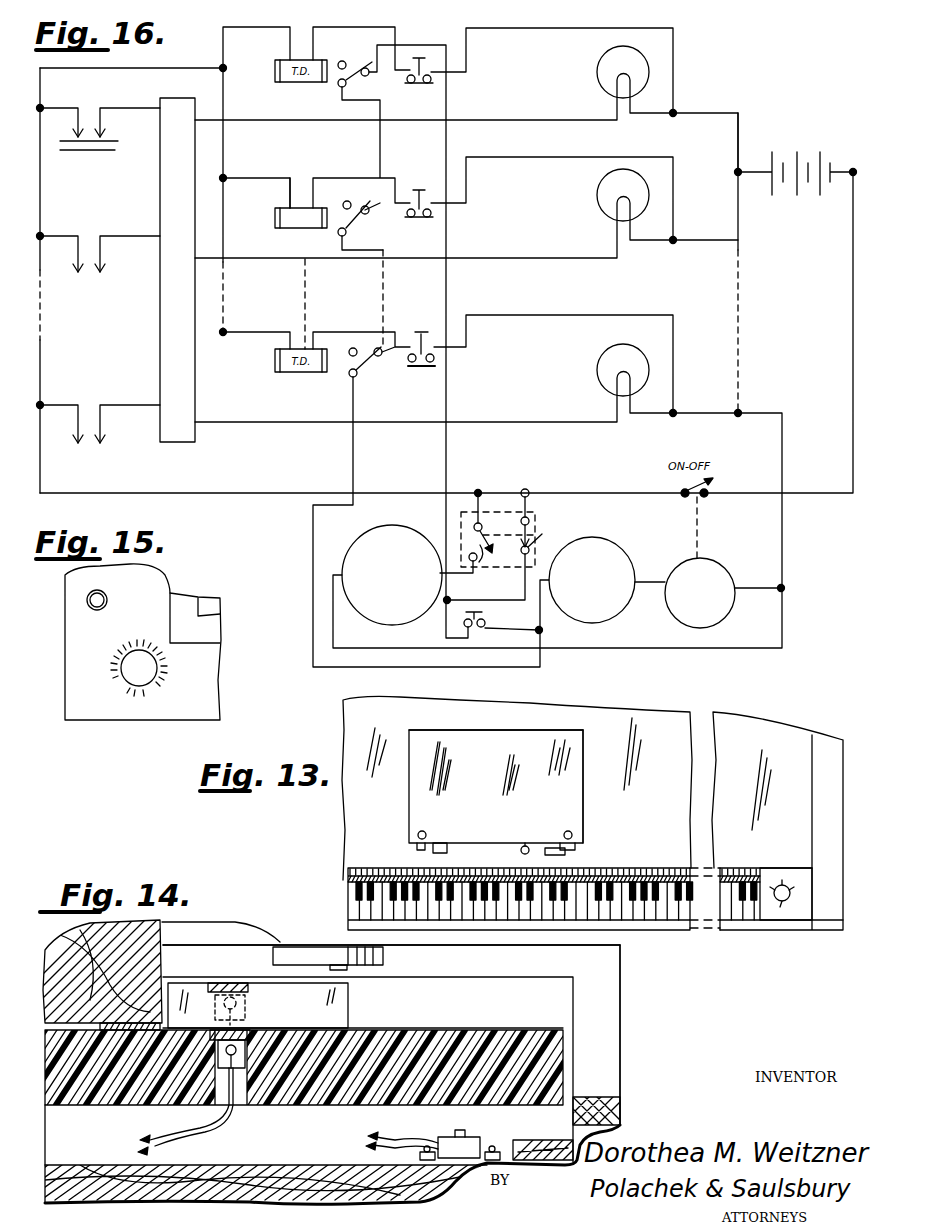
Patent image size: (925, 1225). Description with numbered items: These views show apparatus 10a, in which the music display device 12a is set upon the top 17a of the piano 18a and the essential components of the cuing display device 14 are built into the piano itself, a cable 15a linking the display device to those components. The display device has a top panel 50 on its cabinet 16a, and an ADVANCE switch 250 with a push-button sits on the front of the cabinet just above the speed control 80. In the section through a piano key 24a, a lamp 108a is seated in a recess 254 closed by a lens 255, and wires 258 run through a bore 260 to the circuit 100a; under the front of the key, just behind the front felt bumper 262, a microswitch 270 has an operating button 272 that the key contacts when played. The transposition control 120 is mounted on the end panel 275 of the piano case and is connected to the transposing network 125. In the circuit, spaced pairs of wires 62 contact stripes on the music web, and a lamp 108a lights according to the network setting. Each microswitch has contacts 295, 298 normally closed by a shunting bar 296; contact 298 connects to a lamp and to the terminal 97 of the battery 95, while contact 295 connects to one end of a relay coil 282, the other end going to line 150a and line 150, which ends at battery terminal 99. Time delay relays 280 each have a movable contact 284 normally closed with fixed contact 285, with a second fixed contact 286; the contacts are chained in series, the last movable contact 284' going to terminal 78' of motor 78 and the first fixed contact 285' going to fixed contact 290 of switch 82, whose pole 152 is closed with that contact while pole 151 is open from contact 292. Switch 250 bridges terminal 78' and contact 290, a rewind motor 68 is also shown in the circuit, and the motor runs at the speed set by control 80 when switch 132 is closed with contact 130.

In FIG. 16, the spaced pairs of wires 62 is at (92, 114).
In FIG. 16, the transposing network 125 is at (162, 98).
In FIG. 16, the line 150 is at (42, 207).
In FIG. 16, the line 150a is at (238, 114).
In FIG. 16, the time delay relays 280 is at (301, 192).
In FIG. 16, the coil 282 is at (285, 232).
In FIG. 16, the movable contact 284 is at (362, 223).
In FIG. 16, the last movable relay contact 284' is at (370, 376).
In FIG. 16, the fixed contact 285 is at (396, 227).
In FIG. 16, the fixed contact of the first relay 285' is at (390, 86).
In FIG. 16, the fixed contact 286 is at (349, 201).
In FIG. 16, the microswitch 270 is at (412, 350).
In FIG. 14, the microswitch 270 is at (466, 1148).
In FIG. 16, the operating button 272 is at (429, 331).
In FIG. 14, the operating button 272 is at (443, 1138).
In FIG. 16, the contact 295 is at (410, 362).
In FIG. 16, the shunting bar 296 is at (432, 368).
In FIG. 16, the contact 298 is at (437, 357).
In FIG. 16, the lamp 108a is at (600, 88).
In FIG. 14, the lamp 108a is at (215, 1050).
In FIG. 16, the circuit 100a is at (706, 100).
In FIG. 16, the battery terminal 97 is at (756, 171).
In FIG. 16, the battery 95 is at (819, 160).
In FIG. 16, the battery terminal 99 is at (840, 171).
In FIG. 16, the rewind motor 68 is at (357, 531).
In FIG. 16, the switch 82 is at (461, 518).
In FIG. 13, the switch 82 is at (582, 852).
In FIG. 16, the switch contact 292 is at (469, 555).
In FIG. 16, the switch pole 151 is at (503, 565).
In FIG. 16, the switch pole 152 is at (530, 524).
In FIG. 16, the fixed contact 290 is at (532, 549).
In FIG. 16, the motor 78 is at (597, 571).
In FIG. 16, the terminal 78' is at (453, 524).
In FIG. 16, the speed control 80 is at (722, 573).
In FIG. 15, the speed control 80 is at (148, 664).
In FIG. 13, the speed control 80 is at (453, 843).
In FIG. 16, the ADVANCE switch 250 is at (486, 623).
In FIG. 15, the ADVANCE switch 250 is at (88, 607).
In FIG. 13, the ADVANCE switch 250 is at (418, 847).
In FIG. 16, the switch 132 is at (684, 490).
In FIG. 16, the contact 130 is at (712, 492).
In FIG. 15, the cabinet 16a is at (60, 672).
In FIG. 13, the cabinet 16a is at (460, 740).
In FIG. 13, the top of the piano 17a is at (360, 738).
In FIG. 13, the music display device 12a is at (585, 743).
In FIG. 13, the piano 18a is at (808, 705).
In FIG. 14, the piano 18a is at (620, 1025).
In FIG. 13, the top panel 50 is at (420, 787).
In FIG. 13, the cable 15a is at (520, 850).
In FIG. 13, the apparatus 10a is at (400, 823).
In FIG. 13, the lens 255 is at (350, 888).
In FIG. 14, the lens 255 is at (262, 1030).
In FIG. 13, the piano key 24a is at (360, 908).
In FIG. 14, the piano key 24a is at (372, 1040).
In FIG. 13, the transposition control 120 is at (800, 902).
In FIG. 14, the transposition control 120 is at (322, 947).
In FIG. 13, the cuing display device 14 is at (648, 852).
In FIG. 13, the end panel 275 is at (775, 915).
In FIG. 14, the end panel 275 is at (535, 965).
In FIG. 14, the recess 254 is at (218, 1063).
In FIG. 14, the bore 260 is at (273, 1105).
In FIG. 14, the wires 258 is at (225, 1116).
In FIG. 14, the front felt bumper 262 is at (598, 1097).